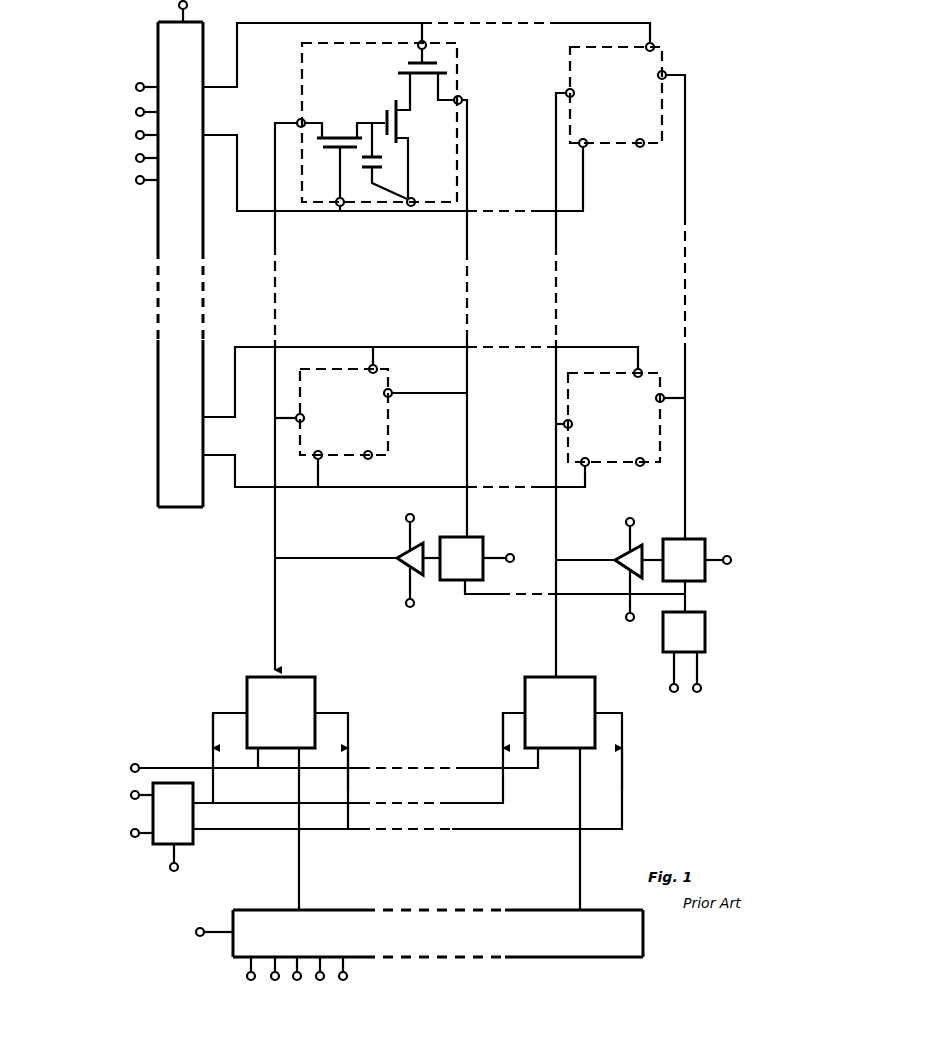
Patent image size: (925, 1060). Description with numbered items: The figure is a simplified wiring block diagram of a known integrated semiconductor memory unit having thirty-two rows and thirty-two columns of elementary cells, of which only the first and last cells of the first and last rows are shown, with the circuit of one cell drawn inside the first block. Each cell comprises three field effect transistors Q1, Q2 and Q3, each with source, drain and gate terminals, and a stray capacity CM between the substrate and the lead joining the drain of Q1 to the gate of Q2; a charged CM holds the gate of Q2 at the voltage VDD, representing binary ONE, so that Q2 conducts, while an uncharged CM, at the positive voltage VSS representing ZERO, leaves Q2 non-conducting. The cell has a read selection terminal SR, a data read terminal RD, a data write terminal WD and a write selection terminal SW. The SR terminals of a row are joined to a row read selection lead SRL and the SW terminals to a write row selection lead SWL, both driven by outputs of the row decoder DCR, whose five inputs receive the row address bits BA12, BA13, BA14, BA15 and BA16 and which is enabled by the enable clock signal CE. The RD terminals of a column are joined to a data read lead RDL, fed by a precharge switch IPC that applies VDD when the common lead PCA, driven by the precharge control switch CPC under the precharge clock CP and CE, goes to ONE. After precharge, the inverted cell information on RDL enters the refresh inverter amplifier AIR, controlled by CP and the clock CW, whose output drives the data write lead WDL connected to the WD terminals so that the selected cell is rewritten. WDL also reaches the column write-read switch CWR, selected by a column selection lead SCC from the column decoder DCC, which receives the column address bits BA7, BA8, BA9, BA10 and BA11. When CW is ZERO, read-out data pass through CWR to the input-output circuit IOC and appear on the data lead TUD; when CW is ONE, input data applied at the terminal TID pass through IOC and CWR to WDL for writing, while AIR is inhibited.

The row decoder DCR is at (203, 236).
The enable clock signal CE is at (439, 438).
The row address code bit BA12 is at (129, 88).
The row address code bit BA13 is at (129, 113).
The row address code bit BA14 is at (129, 136).
The row address code bit BA15 is at (129, 159).
The row address code bit BA16 is at (129, 181).
The row read selection lead SRL is at (426, 210).
The write row selection lead SWL is at (394, 311).
The read selection terminal SR is at (488, 242).
The data read terminal RD is at (538, 297).
The data write terminal WD is at (423, 375).
The write selection terminal SW is at (464, 313).
The free terminal voltage VSS is at (507, 312).
The field effect transistor Q1 is at (345, 152).
The field effect transistor Q2 is at (405, 135).
The field effect transistor Q3 is at (413, 73).
The stray capacity CM is at (385, 161).
The data read lead RDL is at (467, 445).
The data write lead WDL is at (305, 552).
The refresh inverter amplifier AIR is at (515, 558).
The write clock CW is at (395, 635).
The precharge clock CP is at (429, 752).
The precharge switch IPC is at (717, 543).
The supply voltage VDD is at (618, 570).
The common precharge lead PCA is at (595, 594).
The precharge control switch CPC is at (705, 644).
The column write-read switch CWR is at (315, 700).
The data output lead TUD is at (303, 796).
The data input terminal TID is at (363, 834).
The input-output circuit IOC is at (193, 834).
The column selection lead SCC is at (311, 872).
The column decoder DCC is at (551, 908).
The column address bit BA7 is at (239, 980).
The column address bit BA8 is at (273, 980).
The column address bit BA9 is at (301, 980).
The column address bit BA10 is at (332, 980).
The column address bit BA11 is at (361, 974).